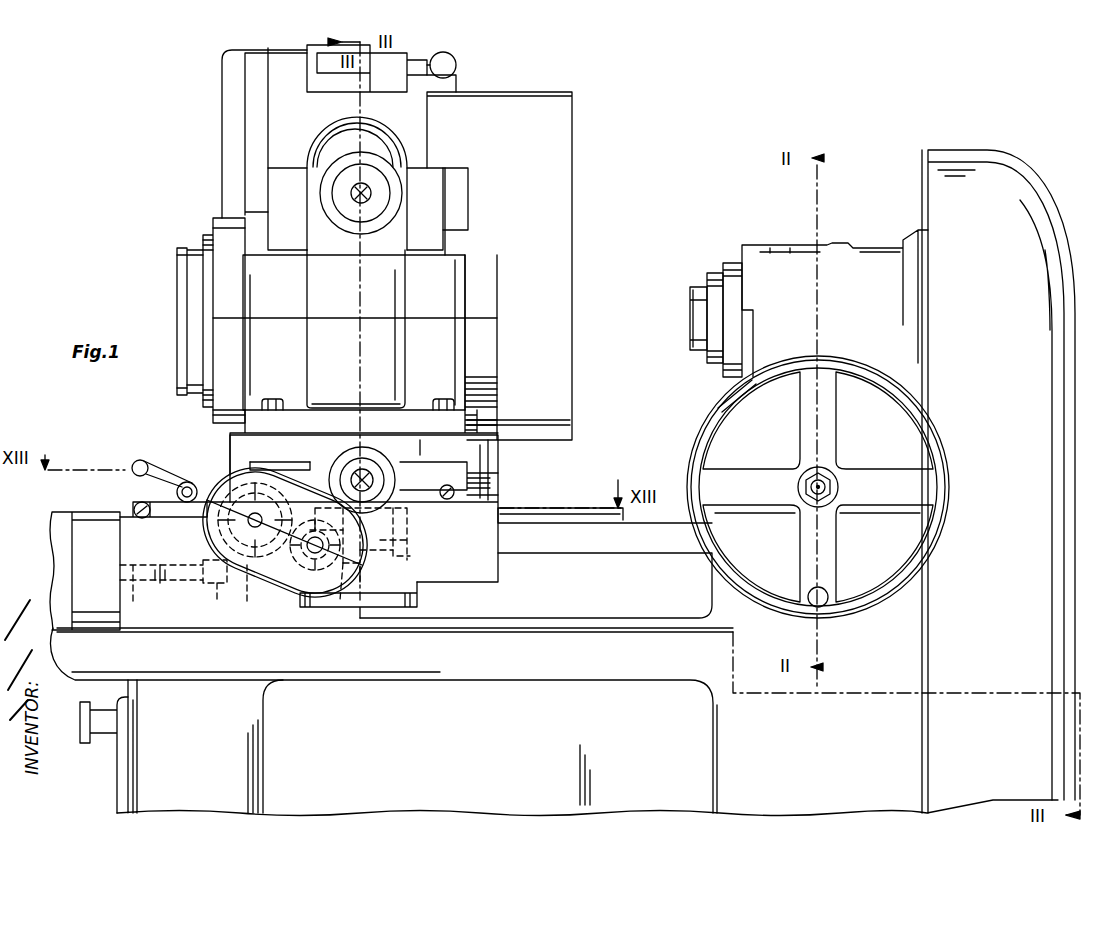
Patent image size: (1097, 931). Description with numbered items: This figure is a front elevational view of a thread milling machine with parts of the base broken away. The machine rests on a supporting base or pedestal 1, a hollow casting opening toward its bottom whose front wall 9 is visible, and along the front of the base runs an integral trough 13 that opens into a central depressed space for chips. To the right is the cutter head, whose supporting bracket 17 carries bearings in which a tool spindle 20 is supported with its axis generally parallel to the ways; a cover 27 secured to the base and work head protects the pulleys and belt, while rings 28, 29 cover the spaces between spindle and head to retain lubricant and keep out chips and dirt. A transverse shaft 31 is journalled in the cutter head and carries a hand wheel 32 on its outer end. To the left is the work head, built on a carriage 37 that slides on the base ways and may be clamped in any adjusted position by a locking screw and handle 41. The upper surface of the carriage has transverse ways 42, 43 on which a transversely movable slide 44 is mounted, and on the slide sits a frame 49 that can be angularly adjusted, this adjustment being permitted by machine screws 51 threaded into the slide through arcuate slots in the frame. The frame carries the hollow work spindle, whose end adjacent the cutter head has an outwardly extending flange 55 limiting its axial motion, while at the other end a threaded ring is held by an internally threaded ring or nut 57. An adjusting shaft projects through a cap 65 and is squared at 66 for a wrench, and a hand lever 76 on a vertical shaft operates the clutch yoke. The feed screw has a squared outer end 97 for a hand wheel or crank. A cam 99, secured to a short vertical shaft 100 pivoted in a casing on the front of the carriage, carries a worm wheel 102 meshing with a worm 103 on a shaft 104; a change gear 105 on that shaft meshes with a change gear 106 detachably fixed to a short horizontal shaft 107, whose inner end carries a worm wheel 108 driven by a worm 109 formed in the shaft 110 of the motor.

The supporting base 1 is at (248, 733).
The front wall 9 is at (587, 748).
The trough 13 is at (392, 720).
The supporting bracket 17 is at (876, 258).
The tool spindle 20 is at (693, 295).
The cover 27 is at (1033, 185).
The ring 28 is at (715, 272).
The ring 29 is at (733, 262).
The transverse shaft 31 is at (818, 467).
The hand wheel 32 is at (710, 412).
The carriage 37 is at (500, 508).
The locking screw and handle 41 is at (128, 472).
The transverse way 42 is at (250, 462).
The transverse way 43 is at (455, 470).
The transversely movable slide 44 is at (500, 457).
The frame 49 is at (467, 422).
The machine screws 51 is at (273, 398).
The flange 55 is at (490, 235).
The internally threaded ring 57 is at (205, 235).
The cap 65 is at (362, 170).
The squared end 66 is at (365, 283).
The hand lever 76 is at (456, 68).
The squared end of screw 97 is at (375, 500).
The cam 99 is at (410, 515).
The short vertical shaft 100 is at (417, 590).
The worm wheel 102 is at (398, 548).
The worm 103 is at (285, 532).
The shaft 104 is at (338, 595).
The change gear 105 is at (300, 582).
The change gear 106 is at (219, 594).
The short horizontal shaft 107 is at (335, 449).
The worm wheel 108 is at (218, 533).
The worm 109 is at (259, 596).
The motor shaft 110 is at (161, 596).